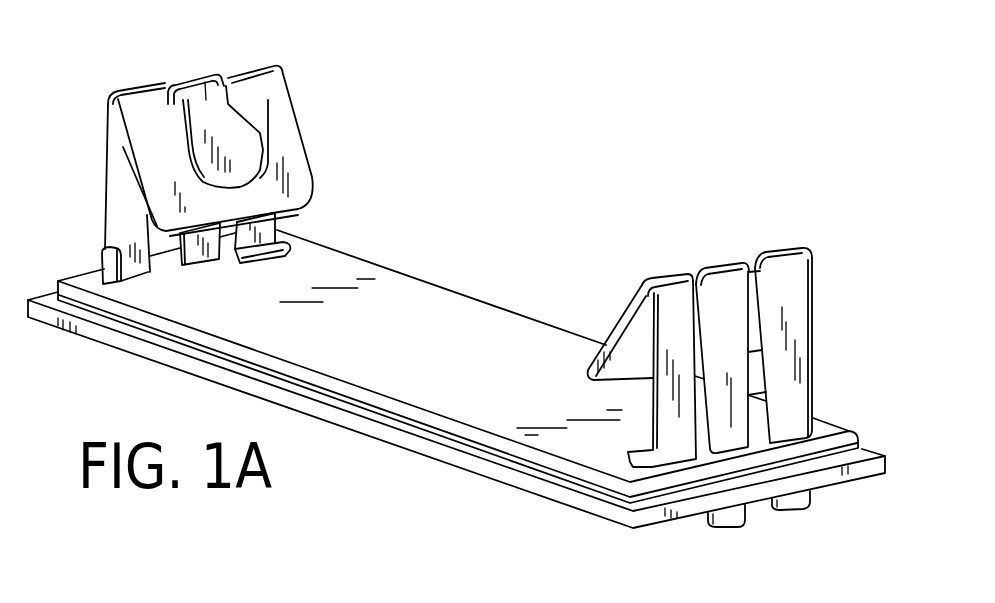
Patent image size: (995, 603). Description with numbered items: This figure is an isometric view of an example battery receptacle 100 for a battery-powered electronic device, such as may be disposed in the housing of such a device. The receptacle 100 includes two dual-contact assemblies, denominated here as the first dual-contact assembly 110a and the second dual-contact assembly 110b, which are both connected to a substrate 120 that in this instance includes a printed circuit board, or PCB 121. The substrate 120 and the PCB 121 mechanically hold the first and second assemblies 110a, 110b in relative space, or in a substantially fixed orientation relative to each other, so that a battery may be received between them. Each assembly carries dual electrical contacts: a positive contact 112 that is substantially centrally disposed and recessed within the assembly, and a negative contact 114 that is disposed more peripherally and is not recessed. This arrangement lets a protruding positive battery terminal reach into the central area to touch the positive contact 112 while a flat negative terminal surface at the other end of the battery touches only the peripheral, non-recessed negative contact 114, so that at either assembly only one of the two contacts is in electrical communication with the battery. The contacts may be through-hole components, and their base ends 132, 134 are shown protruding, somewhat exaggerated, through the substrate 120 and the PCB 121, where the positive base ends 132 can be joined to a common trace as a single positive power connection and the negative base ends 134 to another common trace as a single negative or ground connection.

The battery receptacle 100 is at (573, 164).
The first dual-contact assembly 110a is at (305, 92).
The second dual-contact assembly 110b is at (806, 247).
The positive contact 112 is at (202, 80).
The negative contact 114 is at (163, 157).
The substrate 120 is at (135, 315).
The printed circuit board (PCB) 121 is at (163, 354).
The base end of positive contact 132 is at (732, 520).
The base end of negative contact 134 is at (803, 510).